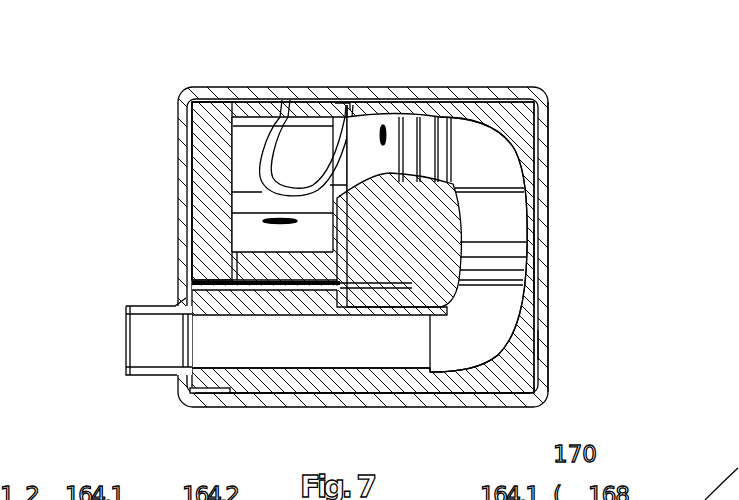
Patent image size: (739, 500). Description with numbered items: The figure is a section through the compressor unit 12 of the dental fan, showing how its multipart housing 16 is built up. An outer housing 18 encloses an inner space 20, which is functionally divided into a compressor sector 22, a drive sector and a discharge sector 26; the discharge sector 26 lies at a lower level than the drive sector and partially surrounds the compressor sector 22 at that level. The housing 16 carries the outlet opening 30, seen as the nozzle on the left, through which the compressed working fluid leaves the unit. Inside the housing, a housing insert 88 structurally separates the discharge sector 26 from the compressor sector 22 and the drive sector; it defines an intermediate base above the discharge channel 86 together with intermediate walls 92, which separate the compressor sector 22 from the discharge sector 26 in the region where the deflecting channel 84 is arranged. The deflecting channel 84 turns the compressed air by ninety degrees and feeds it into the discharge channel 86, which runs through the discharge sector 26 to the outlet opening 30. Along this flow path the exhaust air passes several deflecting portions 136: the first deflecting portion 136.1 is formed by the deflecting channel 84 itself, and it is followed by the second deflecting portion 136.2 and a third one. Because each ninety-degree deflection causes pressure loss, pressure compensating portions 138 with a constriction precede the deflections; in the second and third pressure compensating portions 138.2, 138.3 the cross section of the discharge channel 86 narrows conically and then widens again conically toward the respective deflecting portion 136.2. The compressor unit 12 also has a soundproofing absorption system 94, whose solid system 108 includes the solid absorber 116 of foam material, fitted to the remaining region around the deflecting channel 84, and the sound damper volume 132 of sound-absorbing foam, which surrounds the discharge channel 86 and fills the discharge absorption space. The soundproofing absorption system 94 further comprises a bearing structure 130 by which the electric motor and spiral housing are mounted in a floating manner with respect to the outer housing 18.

The compressor unit 12 is at (562, 254).
The housing 16 is at (558, 318).
The outer housing 18 is at (548, 342).
The inner space 20 is at (205, 198).
The compressor sector 22 is at (213, 98).
The discharge sector 26 is at (540, 128).
The outlet opening 30 is at (126, 360).
The deflecting channel 84 is at (287, 150).
The discharge channel 86 is at (410, 118).
The housing insert 88 is at (203, 273).
The intermediate walls 92 is at (187, 247).
The soundproofing absorption system 94 is at (560, 100).
The solid system 108 is at (490, 367).
The solid absorber 116 is at (187, 123).
The bearing structure 130 is at (187, 167).
The sound damper volume 132 is at (275, 404).
The deflecting portions 136 is at (560, 167).
The first deflecting portion 136.1 is at (262, 100).
The second deflecting portion 136.2 is at (493, 147).
The pressure compensating portions 138 is at (562, 286).
The second pressure compensating portion 138.2 is at (418, 135).
The third pressure compensating portion 138.3 is at (503, 248).